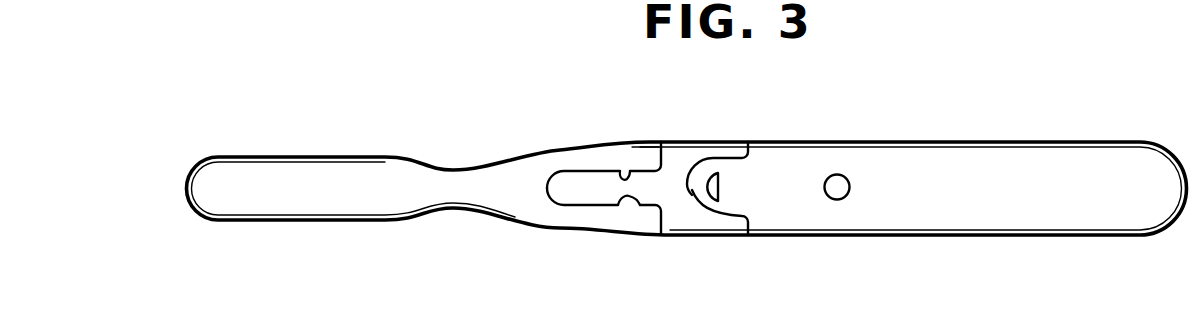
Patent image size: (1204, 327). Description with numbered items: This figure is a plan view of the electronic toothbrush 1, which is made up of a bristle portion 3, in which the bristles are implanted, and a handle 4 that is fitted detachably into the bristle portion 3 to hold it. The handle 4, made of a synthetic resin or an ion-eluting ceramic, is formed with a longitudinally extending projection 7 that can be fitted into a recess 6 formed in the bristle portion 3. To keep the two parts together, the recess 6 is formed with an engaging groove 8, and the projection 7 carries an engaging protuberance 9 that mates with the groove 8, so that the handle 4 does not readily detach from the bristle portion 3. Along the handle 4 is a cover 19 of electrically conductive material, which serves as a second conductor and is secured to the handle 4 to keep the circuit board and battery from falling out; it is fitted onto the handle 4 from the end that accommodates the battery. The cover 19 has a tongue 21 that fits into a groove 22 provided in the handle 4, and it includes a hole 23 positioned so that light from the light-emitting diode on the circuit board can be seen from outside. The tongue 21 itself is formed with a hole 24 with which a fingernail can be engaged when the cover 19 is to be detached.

The electronic toothbrush 1 is at (940, 140).
The bristle portion 3 is at (350, 155).
The handle 4 is at (702, 140).
The recess 6 is at (570, 177).
The projection 7 is at (592, 200).
The engaging groove 8 is at (633, 168).
The engaging protuberance 9 is at (643, 210).
The cover 19 is at (1053, 148).
The tongue 21 is at (735, 198).
The groove 22 is at (704, 205).
The hole 23 is at (837, 192).
The hole 24 is at (690, 192).